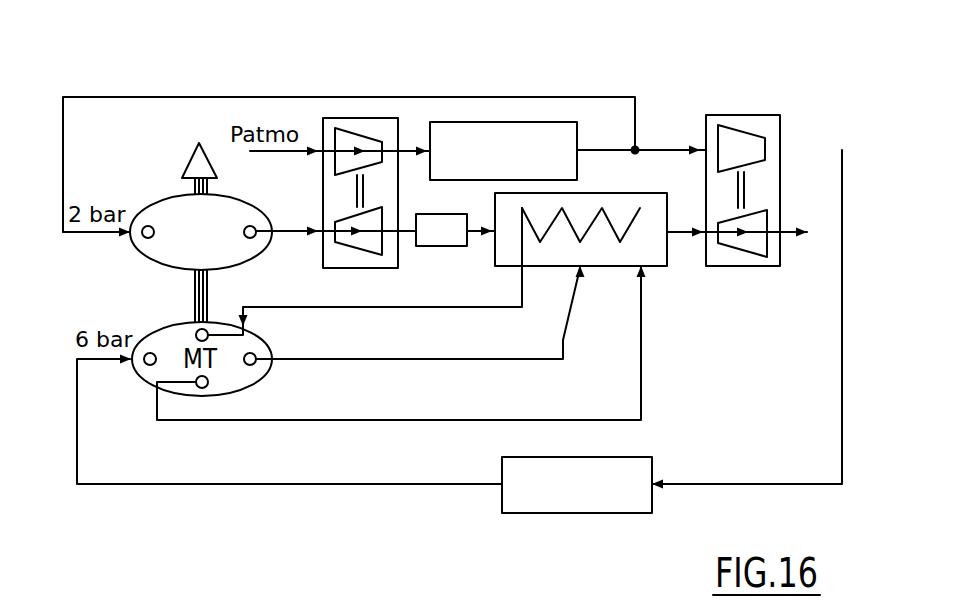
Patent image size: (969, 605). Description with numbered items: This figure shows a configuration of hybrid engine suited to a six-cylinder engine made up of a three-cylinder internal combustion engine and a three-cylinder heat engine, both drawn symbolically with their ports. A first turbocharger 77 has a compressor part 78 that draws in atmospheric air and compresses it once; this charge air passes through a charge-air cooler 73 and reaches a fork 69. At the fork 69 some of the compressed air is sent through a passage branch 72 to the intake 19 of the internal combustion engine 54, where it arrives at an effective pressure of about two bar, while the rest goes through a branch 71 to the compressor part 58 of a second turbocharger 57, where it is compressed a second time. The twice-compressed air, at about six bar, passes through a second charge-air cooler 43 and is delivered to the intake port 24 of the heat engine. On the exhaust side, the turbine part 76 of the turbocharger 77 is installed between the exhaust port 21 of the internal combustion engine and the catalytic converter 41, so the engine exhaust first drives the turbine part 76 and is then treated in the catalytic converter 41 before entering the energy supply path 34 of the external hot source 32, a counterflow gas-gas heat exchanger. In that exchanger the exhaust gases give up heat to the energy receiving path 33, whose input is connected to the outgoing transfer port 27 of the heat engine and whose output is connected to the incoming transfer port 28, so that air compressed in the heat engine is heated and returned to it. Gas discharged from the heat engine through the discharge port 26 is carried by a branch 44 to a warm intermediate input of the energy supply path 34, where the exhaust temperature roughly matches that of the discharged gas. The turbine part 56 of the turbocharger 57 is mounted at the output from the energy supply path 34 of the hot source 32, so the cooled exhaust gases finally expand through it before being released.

The passage branch 72 is at (155, 97).
The intake 19 is at (148, 226).
The exhaust port 21 is at (250, 226).
The internal combustion engine 54 is at (142, 259).
The first turbocharger 77 is at (343, 118).
The compressor part 78 is at (370, 140).
The turbine part 76 is at (358, 255).
The charge-air cooler 73 is at (510, 122).
The fork 69 is at (634, 149).
The branch 71 is at (666, 148).
The catalytic converter 41 is at (433, 247).
The energy supply path 34 is at (578, 208).
The energy receiving path 33 is at (618, 238).
The branch 44 is at (597, 268).
The external hot source 32 is at (672, 272).
The turbocharger 57 is at (728, 115).
The compressor part 58 is at (746, 134).
The turbine part 56 is at (748, 257).
The charge-air cooler 43 is at (558, 514).
The intake port 24 is at (148, 354).
The incoming transfer port 28 is at (198, 330).
The discharge port 26 is at (256, 357).
The outgoing transfer port 27 is at (207, 387).